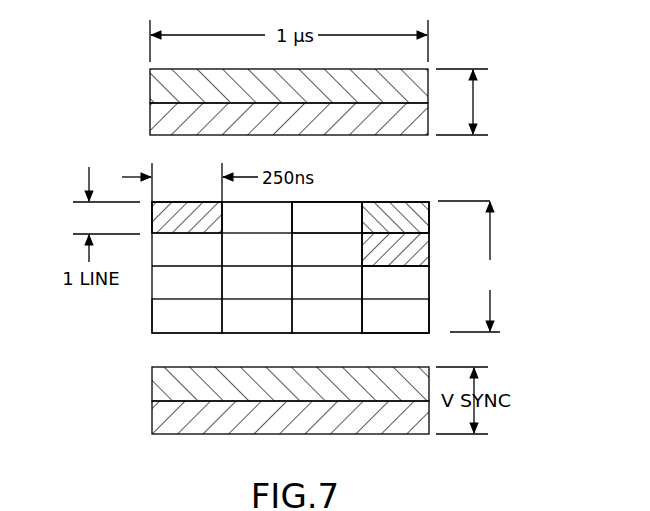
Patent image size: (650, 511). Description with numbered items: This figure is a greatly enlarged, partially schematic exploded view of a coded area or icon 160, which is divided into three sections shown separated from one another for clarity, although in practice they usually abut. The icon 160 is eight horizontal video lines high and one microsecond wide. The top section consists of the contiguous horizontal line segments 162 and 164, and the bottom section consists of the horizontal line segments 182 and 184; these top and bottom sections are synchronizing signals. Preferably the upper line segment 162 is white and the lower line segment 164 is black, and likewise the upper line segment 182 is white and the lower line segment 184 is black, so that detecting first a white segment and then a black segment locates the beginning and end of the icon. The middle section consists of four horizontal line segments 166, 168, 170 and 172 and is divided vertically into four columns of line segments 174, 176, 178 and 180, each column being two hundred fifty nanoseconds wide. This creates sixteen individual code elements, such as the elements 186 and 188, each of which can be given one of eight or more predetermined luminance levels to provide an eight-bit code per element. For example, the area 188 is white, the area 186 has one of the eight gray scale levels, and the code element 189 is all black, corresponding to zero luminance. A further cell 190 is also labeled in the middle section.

The icon 160 is at (514, 136).
The upper line segment 162 is at (153, 88).
The lower line segment 164 is at (160, 121).
The horizontal line segment 166 is at (117, 212).
The horizontal line segment 168 is at (498, 245).
The horizontal line segment 170 is at (431, 288).
The horizontal line segment 172 is at (144, 313).
The column of line segments 174 is at (161, 334).
The column of line segments 176 is at (252, 334).
The column of line segments 178 is at (310, 333).
The column of line segments 180 is at (400, 333).
The upper line segment 182 is at (151, 383).
The lower line segment 184 is at (388, 434).
The code element 186 is at (181, 202).
The code element 188 is at (398, 202).
The code element 189 is at (431, 250).
The pixel cell 190 is at (326, 202).